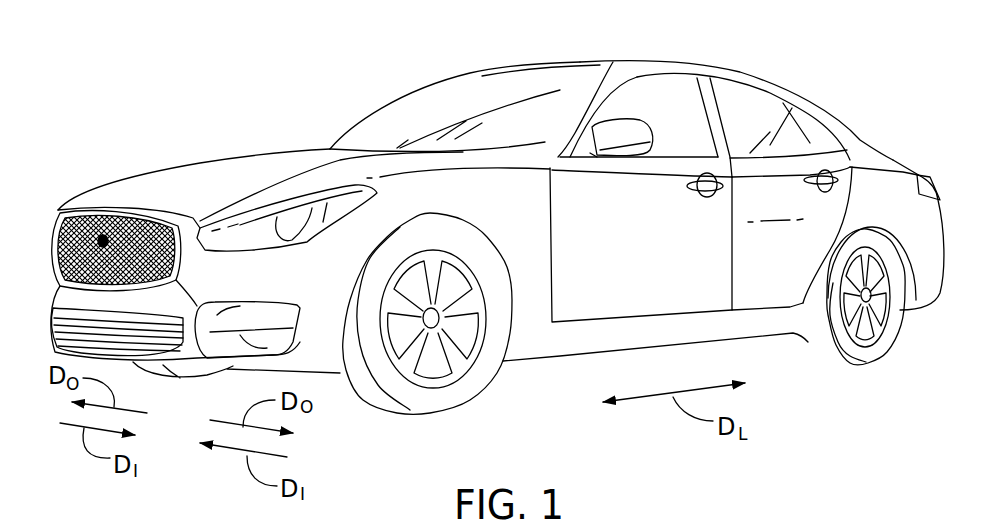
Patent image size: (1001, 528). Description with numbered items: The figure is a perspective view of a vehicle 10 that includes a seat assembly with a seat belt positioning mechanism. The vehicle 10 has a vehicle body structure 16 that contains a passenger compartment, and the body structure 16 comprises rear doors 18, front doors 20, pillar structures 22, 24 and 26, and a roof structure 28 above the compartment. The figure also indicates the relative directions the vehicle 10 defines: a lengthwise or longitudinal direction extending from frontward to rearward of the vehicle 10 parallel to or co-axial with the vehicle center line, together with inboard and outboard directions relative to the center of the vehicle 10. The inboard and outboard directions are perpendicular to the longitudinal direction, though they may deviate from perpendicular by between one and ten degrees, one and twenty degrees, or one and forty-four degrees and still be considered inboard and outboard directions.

The vehicle 10 is at (806, 50).
The vehicle body structure 16 is at (578, 57).
The rear doors 18 is at (768, 285).
The front doors 20 is at (620, 297).
The pillar structure 22 is at (580, 110).
The pillar structure 24 is at (714, 107).
The pillar structure 26 is at (855, 143).
The roof structure 28 is at (643, 68).